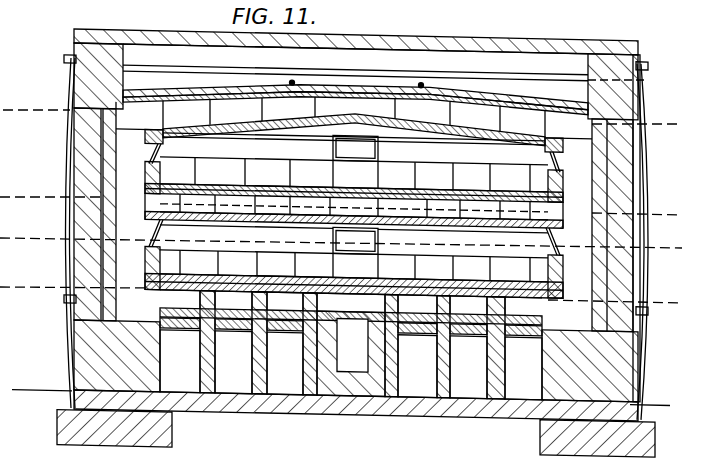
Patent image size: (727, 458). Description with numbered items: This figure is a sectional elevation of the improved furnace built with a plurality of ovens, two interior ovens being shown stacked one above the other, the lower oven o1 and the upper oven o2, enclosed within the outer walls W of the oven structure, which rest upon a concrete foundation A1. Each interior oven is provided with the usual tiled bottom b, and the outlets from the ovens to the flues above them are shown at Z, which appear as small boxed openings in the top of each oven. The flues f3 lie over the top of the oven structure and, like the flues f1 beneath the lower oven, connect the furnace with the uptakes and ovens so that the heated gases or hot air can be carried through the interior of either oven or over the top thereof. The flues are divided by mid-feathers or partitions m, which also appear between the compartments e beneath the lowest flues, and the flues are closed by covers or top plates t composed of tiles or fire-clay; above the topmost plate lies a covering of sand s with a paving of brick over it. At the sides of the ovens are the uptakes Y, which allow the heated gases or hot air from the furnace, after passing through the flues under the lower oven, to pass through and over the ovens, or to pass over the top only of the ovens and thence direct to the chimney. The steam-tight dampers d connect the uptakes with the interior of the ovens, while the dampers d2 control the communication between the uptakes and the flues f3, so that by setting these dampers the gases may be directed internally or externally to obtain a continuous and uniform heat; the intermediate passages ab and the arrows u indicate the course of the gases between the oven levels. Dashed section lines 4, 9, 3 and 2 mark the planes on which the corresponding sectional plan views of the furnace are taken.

The outer walls W is at (90, 82).
The concrete foundation A1 is at (338, 410).
The covering of sand s is at (355, 62).
The covers or top plates t is at (188, 101).
The damper d2 is at (561, 233).
The flues f3 is at (354, 120).
The mid-feathers or partitions m is at (513, 342).
The interior oven o2 is at (354, 167).
The interior oven o1 is at (354, 261).
The intermediate cell row ab is at (146, 201).
The dampers d is at (160, 150).
The outlets Z is at (355, 194).
The tiled bottoms b is at (242, 150).
The flow arrow u is at (333, 152).
The uptakes Y is at (142, 158).
The flues f1 is at (351, 325).
The lower compartment e is at (351, 359).
The section line 4 4 is at (346, 108).
The section line 9 9 is at (347, 210).
The section line 3 3 is at (347, 247).
The section line 2 2 is at (346, 299).